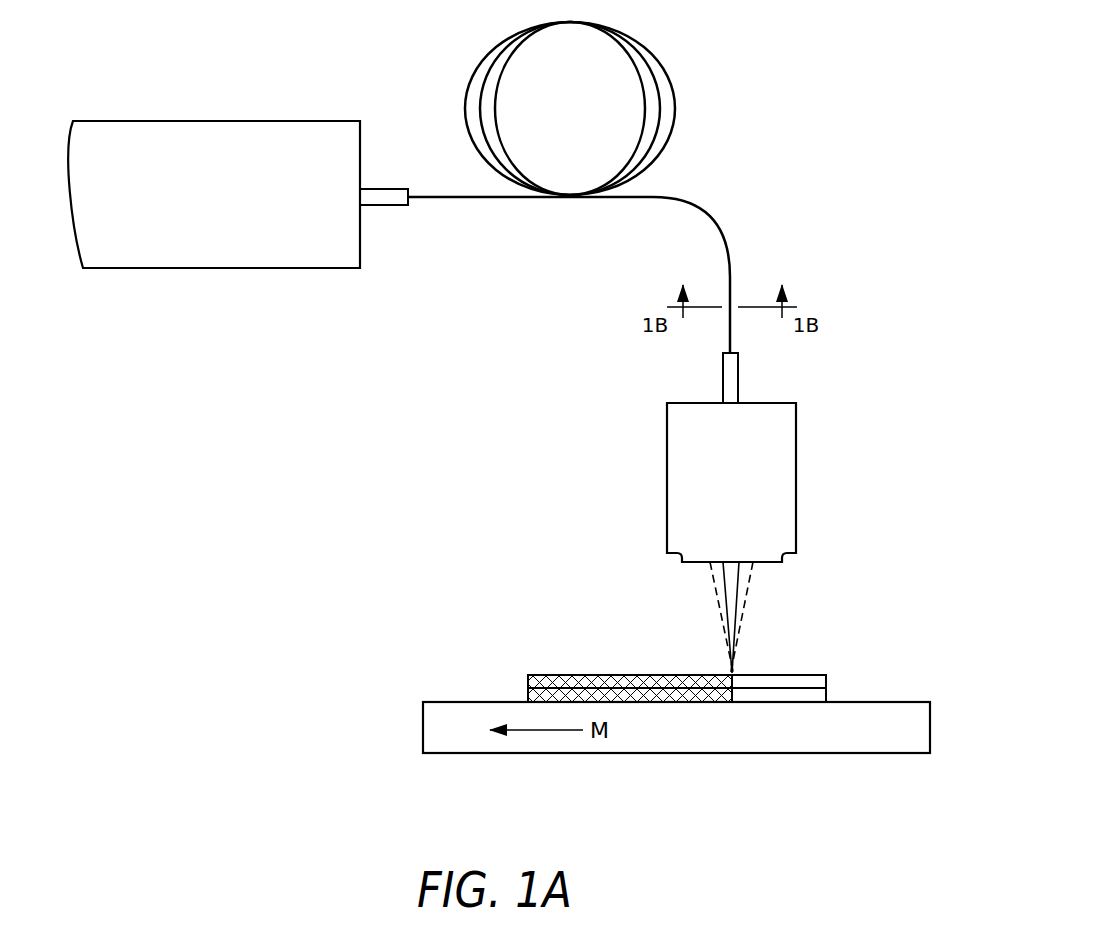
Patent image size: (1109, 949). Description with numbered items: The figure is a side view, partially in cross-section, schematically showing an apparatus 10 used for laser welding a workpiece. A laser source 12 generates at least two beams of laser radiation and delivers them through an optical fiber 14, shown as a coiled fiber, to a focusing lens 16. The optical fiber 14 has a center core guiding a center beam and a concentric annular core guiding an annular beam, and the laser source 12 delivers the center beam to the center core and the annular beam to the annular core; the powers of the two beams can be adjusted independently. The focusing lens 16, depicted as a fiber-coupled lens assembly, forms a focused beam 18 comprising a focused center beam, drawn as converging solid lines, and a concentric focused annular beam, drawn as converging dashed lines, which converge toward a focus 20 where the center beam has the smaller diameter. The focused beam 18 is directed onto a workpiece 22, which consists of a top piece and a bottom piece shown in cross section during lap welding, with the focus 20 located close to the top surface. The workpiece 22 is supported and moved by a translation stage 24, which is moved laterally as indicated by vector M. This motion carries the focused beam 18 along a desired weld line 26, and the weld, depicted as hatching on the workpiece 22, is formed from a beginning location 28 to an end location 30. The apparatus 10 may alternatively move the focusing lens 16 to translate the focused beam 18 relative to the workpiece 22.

The apparatus 10 is at (824, 181).
The laser source 12 is at (250, 130).
The optical fiber 14 is at (684, 98).
The focusing lens 16 is at (790, 432).
The focused beam 18 is at (711, 614).
The focus 20 is at (733, 686).
The workpiece 22 is at (826, 682).
The translation stage 24 is at (450, 707).
The weld line 26 is at (618, 672).
The beginning location 28 is at (533, 669).
The end location 30 is at (815, 666).